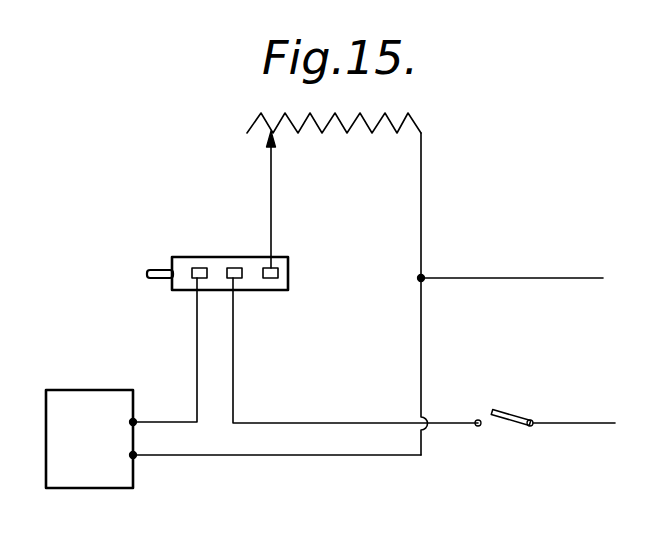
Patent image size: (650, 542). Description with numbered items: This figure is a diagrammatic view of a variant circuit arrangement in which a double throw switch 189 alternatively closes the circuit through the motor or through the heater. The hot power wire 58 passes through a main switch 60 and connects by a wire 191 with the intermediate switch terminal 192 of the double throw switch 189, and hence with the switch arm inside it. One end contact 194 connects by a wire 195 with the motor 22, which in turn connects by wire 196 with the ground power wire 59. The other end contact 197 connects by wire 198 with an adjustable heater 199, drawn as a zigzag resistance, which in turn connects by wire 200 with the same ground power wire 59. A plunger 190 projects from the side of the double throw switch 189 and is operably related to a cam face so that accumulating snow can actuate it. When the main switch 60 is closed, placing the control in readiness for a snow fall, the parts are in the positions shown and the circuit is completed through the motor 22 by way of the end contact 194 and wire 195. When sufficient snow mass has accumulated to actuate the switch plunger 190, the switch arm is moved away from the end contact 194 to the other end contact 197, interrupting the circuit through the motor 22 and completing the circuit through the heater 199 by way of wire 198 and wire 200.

The motor 22 is at (71, 394).
The hot power wire 58 is at (591, 430).
The ground power wire 59 is at (487, 281).
The main switch 60 is at (525, 405).
The double throw switch 189 is at (192, 257).
The switch plunger 190 is at (162, 270).
The wire 191 is at (338, 424).
The intermediate switch terminal 192 is at (234, 268).
The end contact 194 is at (193, 280).
The wire 195 is at (160, 421).
The wire 196 is at (206, 456).
The end contact 197 is at (279, 272).
The wire 198 is at (273, 203).
The adjustable heater 199 is at (385, 113).
The wire 200 is at (422, 191).